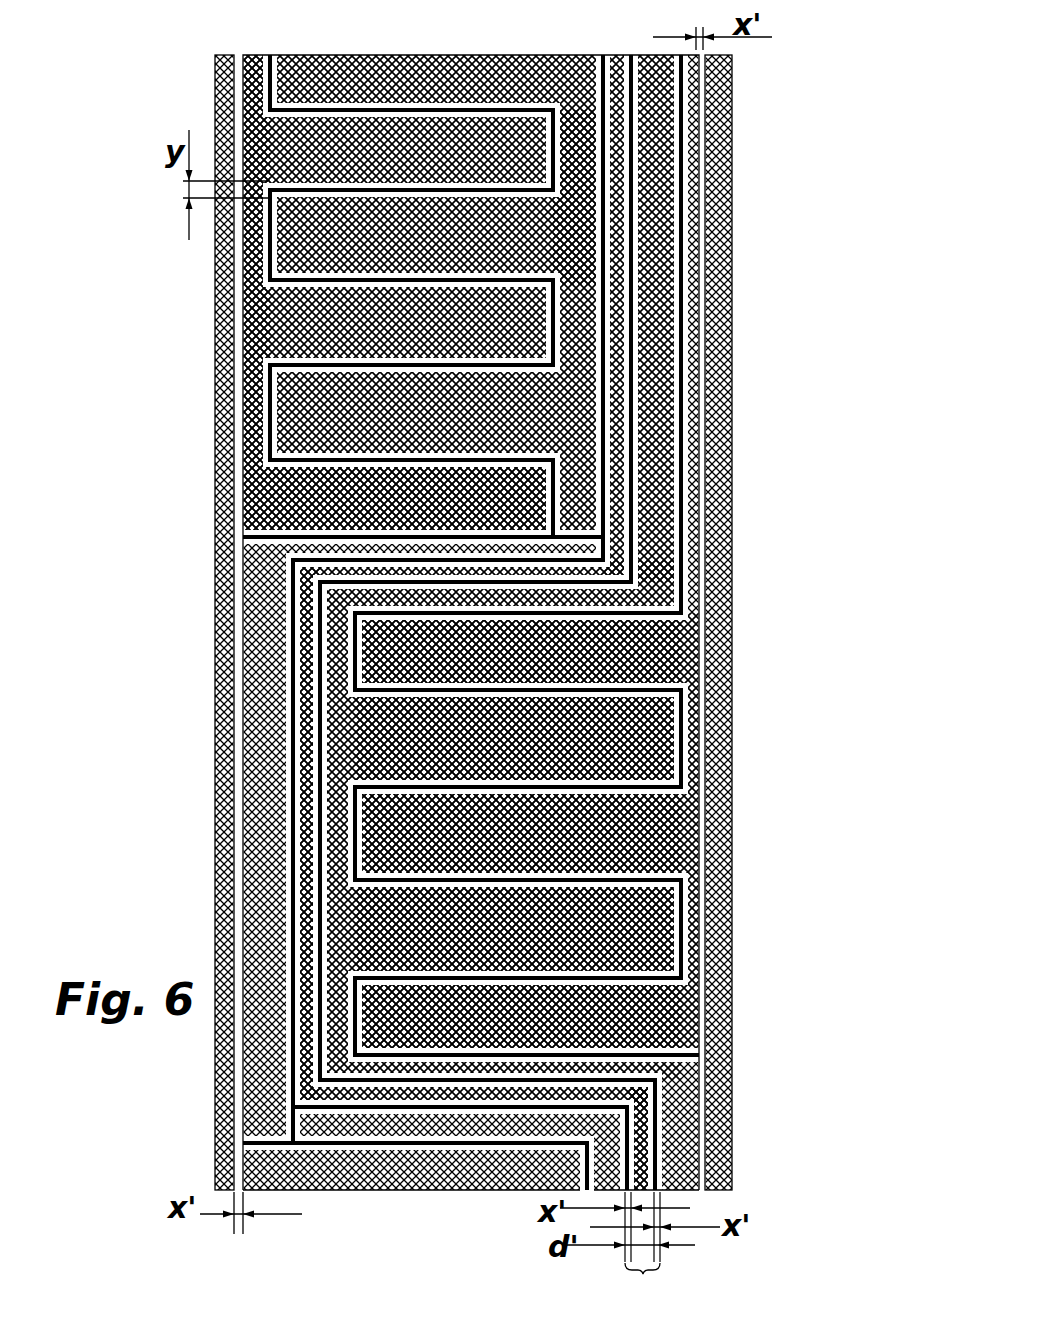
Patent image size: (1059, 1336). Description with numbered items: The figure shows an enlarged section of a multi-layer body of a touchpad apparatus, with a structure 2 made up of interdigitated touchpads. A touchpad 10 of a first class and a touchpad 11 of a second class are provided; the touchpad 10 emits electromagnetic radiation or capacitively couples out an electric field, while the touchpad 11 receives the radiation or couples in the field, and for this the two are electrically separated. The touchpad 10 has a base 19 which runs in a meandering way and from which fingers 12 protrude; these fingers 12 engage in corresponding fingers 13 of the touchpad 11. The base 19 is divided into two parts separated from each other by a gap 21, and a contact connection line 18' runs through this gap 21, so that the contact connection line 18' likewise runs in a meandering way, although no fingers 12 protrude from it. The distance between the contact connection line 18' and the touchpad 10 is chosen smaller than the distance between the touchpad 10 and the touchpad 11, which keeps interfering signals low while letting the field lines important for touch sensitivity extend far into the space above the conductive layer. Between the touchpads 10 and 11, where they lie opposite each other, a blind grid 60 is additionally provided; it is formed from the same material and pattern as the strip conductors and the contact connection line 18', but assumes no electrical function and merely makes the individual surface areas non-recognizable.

The electrode structure 2 is at (797, 67).
The touchpad of a first class 10 is at (500, 92).
The touchpad of a second class 11 is at (283, 328).
The fingers 12 is at (293, 56).
The fingers 13 is at (420, 496).
The contact connection line 18' is at (474, 595).
The base 19 is at (550, 235).
The gap 21 is at (667, 1187).
The blind grid 60 is at (270, 399).